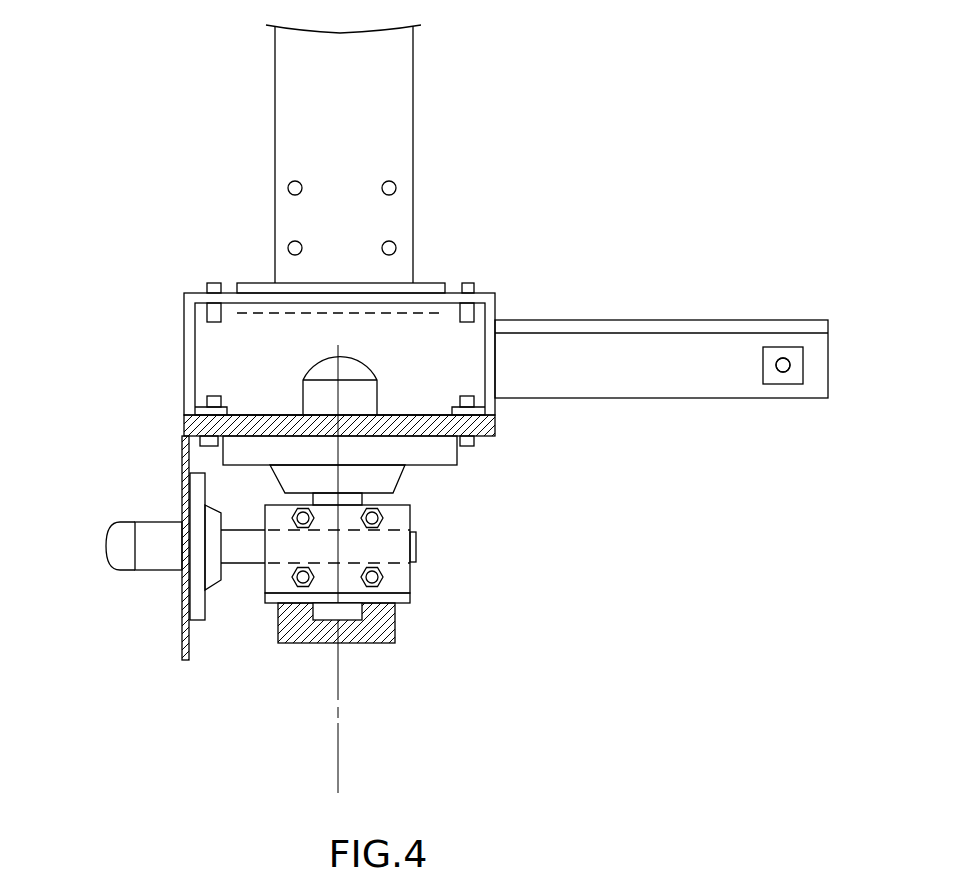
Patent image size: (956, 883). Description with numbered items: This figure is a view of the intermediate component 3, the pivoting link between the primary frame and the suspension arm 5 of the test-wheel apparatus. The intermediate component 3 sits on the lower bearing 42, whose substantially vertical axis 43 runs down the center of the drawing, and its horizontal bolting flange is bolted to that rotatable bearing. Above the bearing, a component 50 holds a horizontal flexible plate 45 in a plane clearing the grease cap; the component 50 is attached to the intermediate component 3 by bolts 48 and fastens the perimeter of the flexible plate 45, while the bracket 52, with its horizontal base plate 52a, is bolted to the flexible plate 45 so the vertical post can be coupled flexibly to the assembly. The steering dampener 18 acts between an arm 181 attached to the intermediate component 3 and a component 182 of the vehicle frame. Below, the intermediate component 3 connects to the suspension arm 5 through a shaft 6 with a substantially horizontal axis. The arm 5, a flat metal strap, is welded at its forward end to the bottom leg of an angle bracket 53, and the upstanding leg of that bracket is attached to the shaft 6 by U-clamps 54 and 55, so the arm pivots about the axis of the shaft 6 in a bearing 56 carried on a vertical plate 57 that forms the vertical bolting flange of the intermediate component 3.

The intermediate component 3 is at (143, 455).
The suspension arm 5 is at (396, 618).
The shaft 6 is at (235, 555).
The steering dampener 18 is at (783, 365).
The component of the vehicle frame 182 is at (775, 383).
The arm 181 is at (623, 347).
The lower bearing 42 is at (455, 452).
The vertical axis 43 is at (336, 733).
The flexible plate 45 is at (458, 283).
The bolts 48 is at (205, 404).
The component 50 is at (186, 335).
The bracket 52 is at (300, 222).
The horizontal base plate 52a is at (432, 283).
The angle bracket 53 is at (403, 580).
The U-clamp 54 is at (300, 515).
The U-clamp 55 is at (378, 517).
The bearing 56 is at (190, 613).
The vertical plate 57 is at (180, 603).